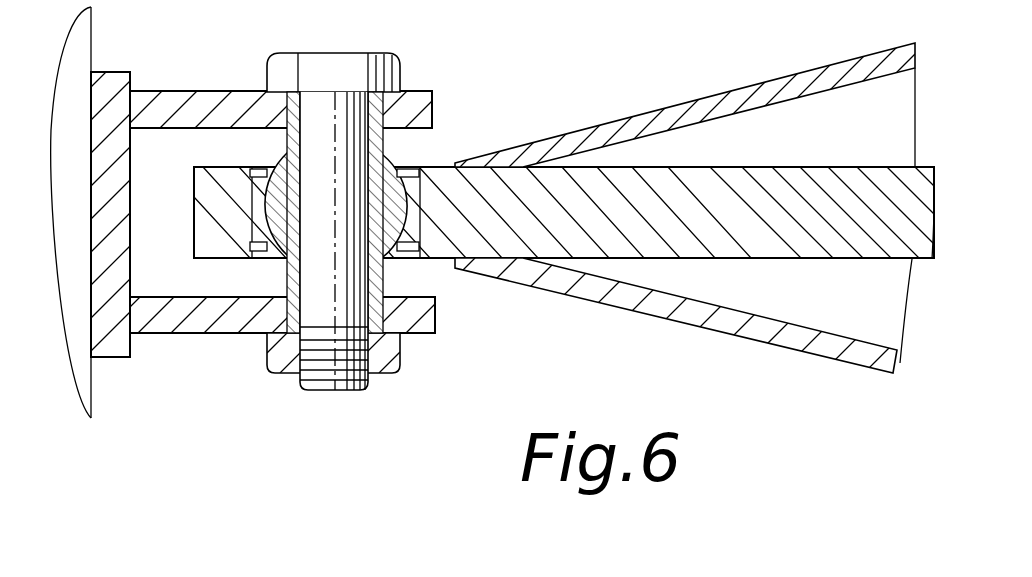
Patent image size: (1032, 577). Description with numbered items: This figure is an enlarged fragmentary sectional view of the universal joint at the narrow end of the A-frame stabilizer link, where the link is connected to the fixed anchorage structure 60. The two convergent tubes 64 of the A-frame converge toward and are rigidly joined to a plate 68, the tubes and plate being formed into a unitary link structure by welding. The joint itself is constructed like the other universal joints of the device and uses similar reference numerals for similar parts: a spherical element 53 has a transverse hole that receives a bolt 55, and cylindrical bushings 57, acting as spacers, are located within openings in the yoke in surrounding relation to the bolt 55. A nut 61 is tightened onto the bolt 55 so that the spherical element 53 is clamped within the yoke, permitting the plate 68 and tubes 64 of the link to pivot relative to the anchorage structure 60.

The spherical element 53 is at (388, 182).
The bolt 55 is at (365, 377).
The cylindrical bushings 57 is at (402, 108).
The fixed anchorage structure 60 is at (130, 352).
The nut 61 is at (398, 363).
The convergent tubes 64 is at (735, 80).
The plate 68 is at (197, 237).